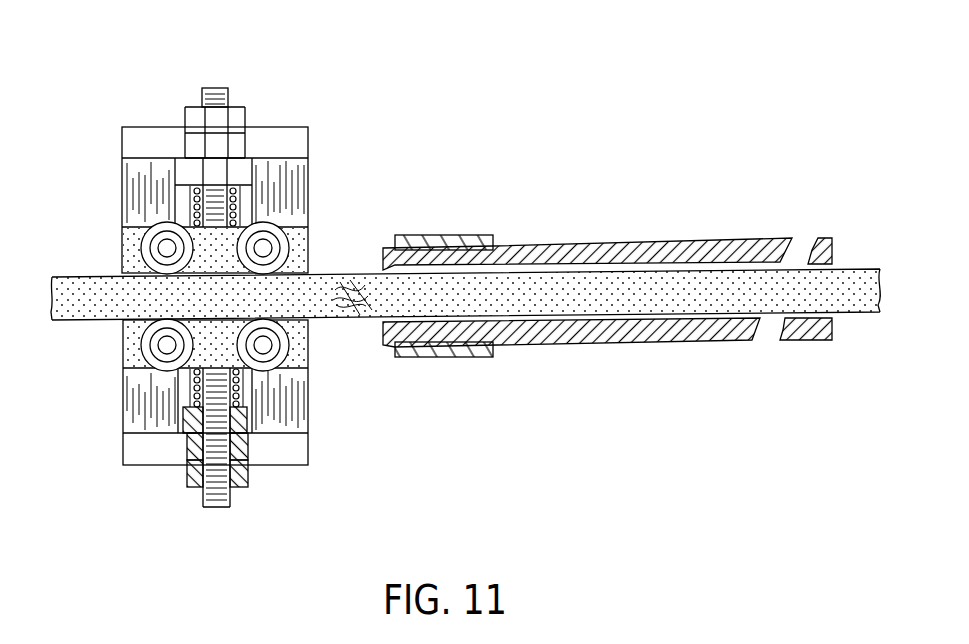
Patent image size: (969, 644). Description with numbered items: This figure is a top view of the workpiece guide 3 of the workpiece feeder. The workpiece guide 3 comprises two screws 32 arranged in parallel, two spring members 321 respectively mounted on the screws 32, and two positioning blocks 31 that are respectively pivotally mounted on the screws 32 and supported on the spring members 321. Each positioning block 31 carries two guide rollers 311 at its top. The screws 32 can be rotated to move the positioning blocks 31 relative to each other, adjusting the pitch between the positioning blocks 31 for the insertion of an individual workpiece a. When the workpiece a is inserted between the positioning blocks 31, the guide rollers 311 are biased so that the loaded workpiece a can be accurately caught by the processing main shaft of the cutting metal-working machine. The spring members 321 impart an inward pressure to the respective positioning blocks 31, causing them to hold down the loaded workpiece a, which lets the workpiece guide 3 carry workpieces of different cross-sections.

The workpiece guide 3 is at (308, 180).
The positioning block 31 is at (292, 252).
The guide roller 311 is at (150, 253).
The spring member 321 is at (198, 197).
The screw 32 is at (215, 88).
The workpiece a is at (613, 287).